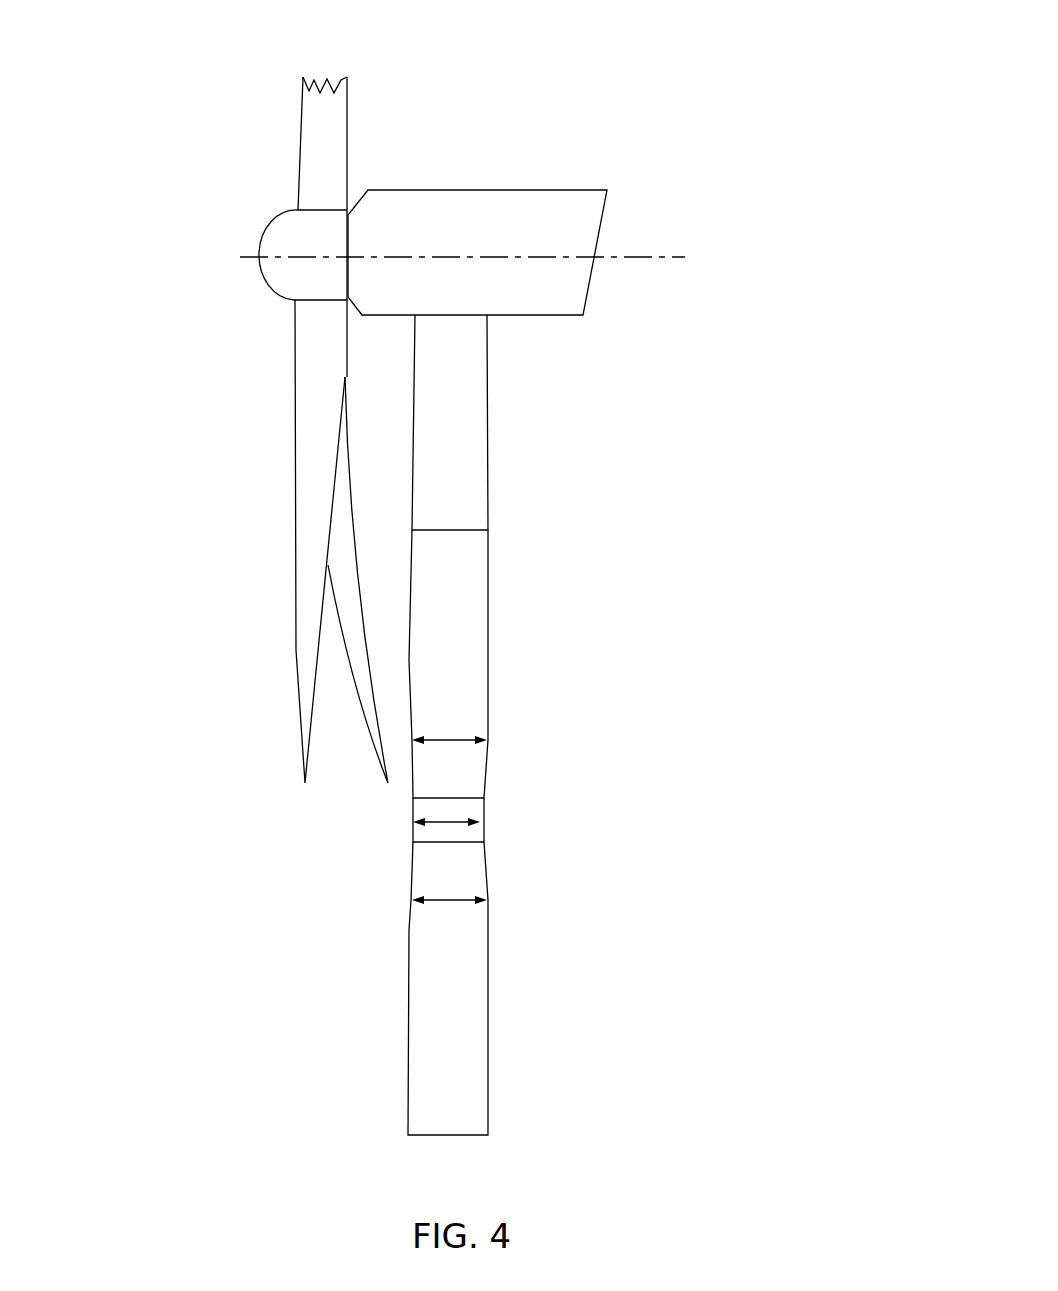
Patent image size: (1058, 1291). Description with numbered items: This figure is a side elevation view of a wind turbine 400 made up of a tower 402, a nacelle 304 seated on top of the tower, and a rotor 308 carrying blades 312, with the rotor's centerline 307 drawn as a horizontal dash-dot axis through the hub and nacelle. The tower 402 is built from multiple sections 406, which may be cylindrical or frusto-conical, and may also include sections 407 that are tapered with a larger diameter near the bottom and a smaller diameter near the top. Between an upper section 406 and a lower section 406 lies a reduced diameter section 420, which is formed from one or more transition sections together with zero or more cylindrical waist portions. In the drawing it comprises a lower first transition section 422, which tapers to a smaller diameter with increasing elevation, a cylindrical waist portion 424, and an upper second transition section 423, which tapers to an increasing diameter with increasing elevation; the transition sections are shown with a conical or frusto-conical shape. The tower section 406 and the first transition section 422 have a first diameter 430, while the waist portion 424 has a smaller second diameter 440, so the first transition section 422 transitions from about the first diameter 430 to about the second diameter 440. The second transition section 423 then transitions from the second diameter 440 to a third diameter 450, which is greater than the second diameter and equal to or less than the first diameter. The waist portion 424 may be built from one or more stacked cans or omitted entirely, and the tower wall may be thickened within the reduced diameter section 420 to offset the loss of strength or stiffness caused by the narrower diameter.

The wind turbine 400 is at (634, 52).
The nacelle 304 is at (498, 189).
The rotor's centerline 307 is at (668, 257).
The rotor 308 is at (162, 205).
The blades 312 is at (298, 147).
The tower 402 is at (667, 459).
The tower sections 406 is at (488, 637).
The tapered sections 407 is at (488, 457).
The reduced diameter section 420 is at (627, 815).
The first transition section 422 is at (486, 872).
The second transition section 423 is at (487, 768).
The waist portion 424 is at (486, 820).
The first diameter 430 is at (438, 904).
The second diameter 440 is at (438, 827).
The third diameter 450 is at (453, 739).